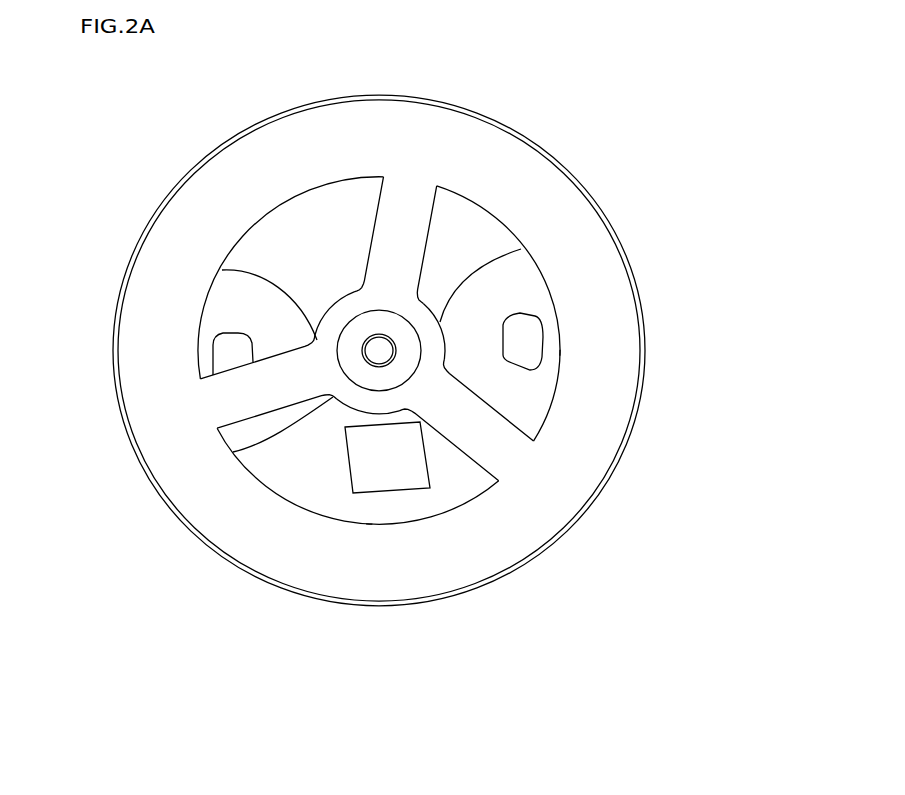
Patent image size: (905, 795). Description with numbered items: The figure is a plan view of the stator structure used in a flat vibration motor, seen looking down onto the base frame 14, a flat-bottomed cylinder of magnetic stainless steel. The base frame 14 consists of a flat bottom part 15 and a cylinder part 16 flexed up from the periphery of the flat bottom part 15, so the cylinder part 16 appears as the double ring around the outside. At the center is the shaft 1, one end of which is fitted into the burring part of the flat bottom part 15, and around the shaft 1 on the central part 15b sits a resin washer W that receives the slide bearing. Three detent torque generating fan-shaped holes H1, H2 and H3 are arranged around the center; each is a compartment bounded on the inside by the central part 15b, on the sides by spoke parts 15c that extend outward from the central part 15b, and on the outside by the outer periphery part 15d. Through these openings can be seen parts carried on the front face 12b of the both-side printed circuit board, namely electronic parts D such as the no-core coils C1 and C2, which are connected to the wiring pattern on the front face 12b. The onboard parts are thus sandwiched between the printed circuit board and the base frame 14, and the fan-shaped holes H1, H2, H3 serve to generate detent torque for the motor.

The shaft 1 is at (388, 358).
The resin washer W is at (347, 359).
The electronic parts D is at (350, 465).
The front face of the both-side printed circuit board 12b is at (362, 515).
The base frame 14 is at (458, 350).
The flat bottom part 15 is at (617, 322).
The central part 15b is at (345, 305).
The spoke parts 15c is at (407, 217).
The outer periphery part 15d is at (533, 527).
The cylinder part 16 is at (647, 367).
The detent torque generating fan-shaped hole H1 is at (432, 240).
The detent torque generating fan-shaped hole H2 is at (473, 467).
The detent torque generating fan-shaped hole H3 is at (370, 242).
The no-core coil C1 is at (523, 283).
The no-core coil C2 is at (217, 302).